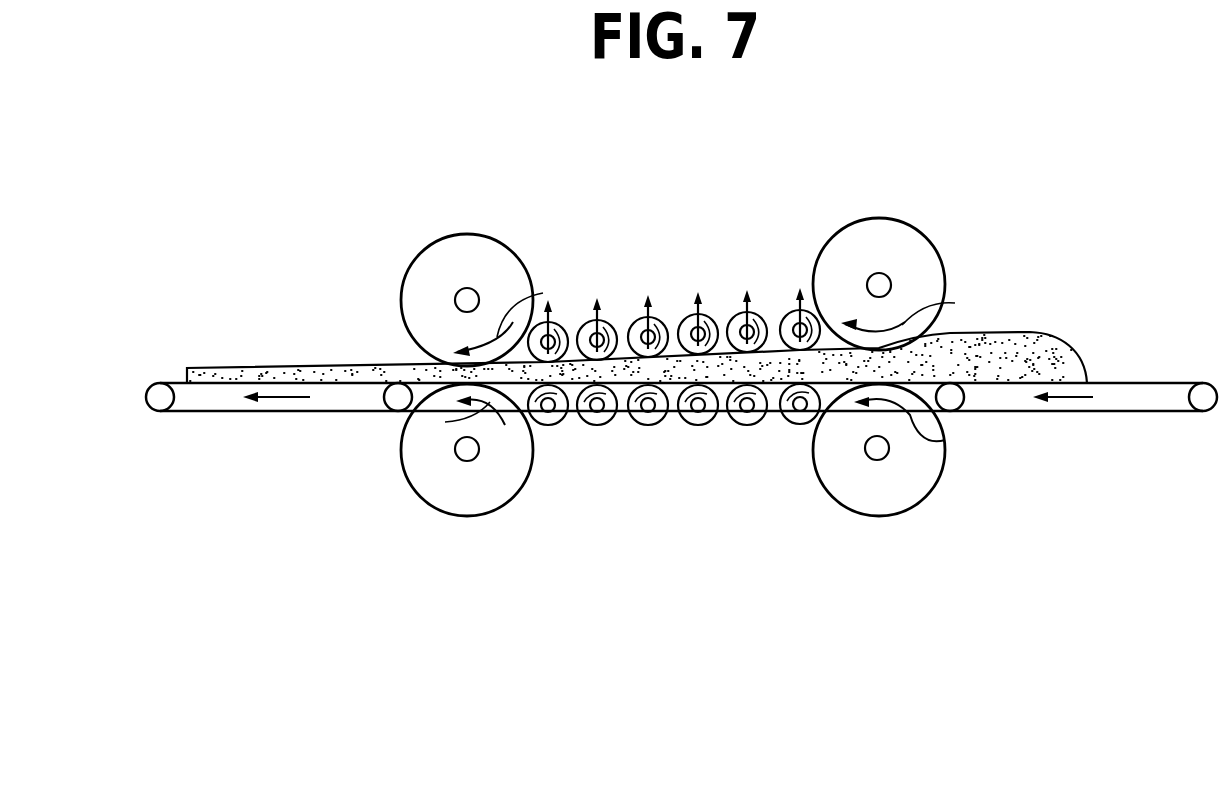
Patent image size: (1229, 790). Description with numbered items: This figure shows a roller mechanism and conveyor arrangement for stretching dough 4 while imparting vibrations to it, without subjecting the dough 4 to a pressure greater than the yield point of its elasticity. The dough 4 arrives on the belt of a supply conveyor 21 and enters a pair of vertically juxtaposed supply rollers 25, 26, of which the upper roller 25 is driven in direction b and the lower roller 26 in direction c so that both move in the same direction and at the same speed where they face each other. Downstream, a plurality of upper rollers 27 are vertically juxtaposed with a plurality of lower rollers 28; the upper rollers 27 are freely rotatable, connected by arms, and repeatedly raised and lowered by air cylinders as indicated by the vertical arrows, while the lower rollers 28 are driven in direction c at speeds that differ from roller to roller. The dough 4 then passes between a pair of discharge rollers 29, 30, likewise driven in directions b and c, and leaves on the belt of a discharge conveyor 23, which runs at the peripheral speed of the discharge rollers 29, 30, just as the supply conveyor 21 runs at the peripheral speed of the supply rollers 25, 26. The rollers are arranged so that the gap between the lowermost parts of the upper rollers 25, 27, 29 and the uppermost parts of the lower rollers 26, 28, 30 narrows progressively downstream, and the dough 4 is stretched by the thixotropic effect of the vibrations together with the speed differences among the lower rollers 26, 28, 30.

The sheet material 4 is at (1046, 332).
The supply conveyor 21 is at (1090, 413).
The discharge conveyor 23 is at (250, 413).
The upper supply roller 25 is at (877, 227).
The lower supply roller 26 is at (925, 480).
The upper rollers 27 is at (785, 318).
The lower rollers 28 is at (773, 424).
The upper discharge roller 29 is at (487, 248).
The lower discharge roller 30 is at (487, 505).